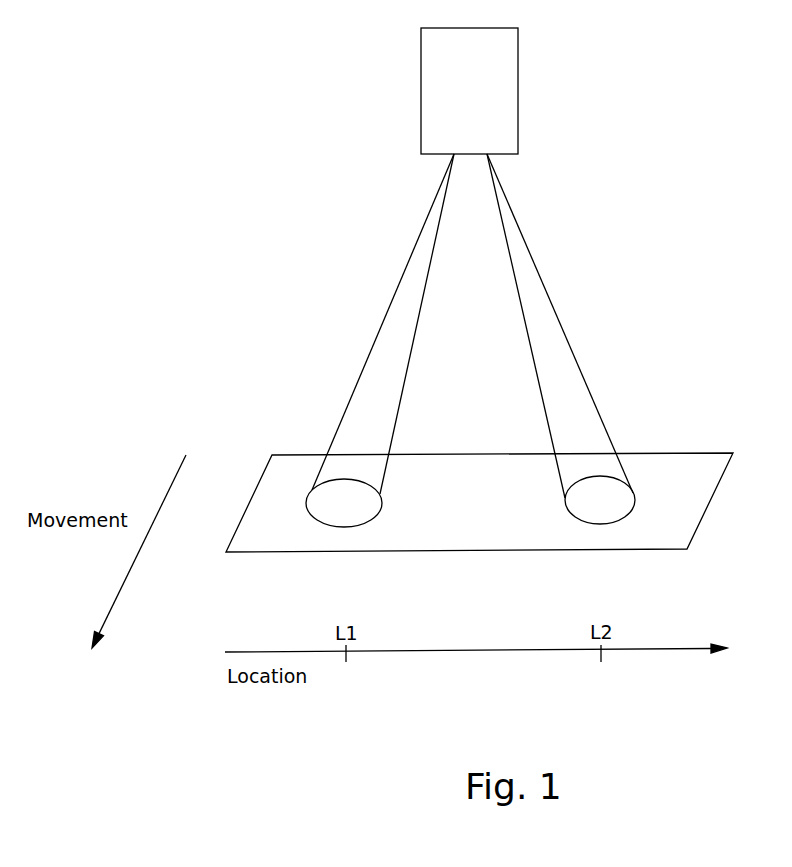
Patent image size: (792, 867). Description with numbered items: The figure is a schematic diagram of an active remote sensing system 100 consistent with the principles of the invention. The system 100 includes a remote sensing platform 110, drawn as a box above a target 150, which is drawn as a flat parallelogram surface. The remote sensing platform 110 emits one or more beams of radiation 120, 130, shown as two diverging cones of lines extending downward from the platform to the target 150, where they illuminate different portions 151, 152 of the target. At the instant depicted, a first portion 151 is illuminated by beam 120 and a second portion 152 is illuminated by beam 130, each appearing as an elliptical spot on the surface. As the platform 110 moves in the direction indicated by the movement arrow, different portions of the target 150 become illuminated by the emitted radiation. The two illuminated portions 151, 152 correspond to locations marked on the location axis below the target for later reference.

The active remote sensing system 100 is at (724, 131).
The remote sensing platform 110 is at (438, 58).
The beam of radiation 120 is at (392, 358).
The beam of radiation 130 is at (543, 283).
The target 150 is at (717, 468).
The first portion 151 is at (348, 527).
The second portion 152 is at (602, 524).